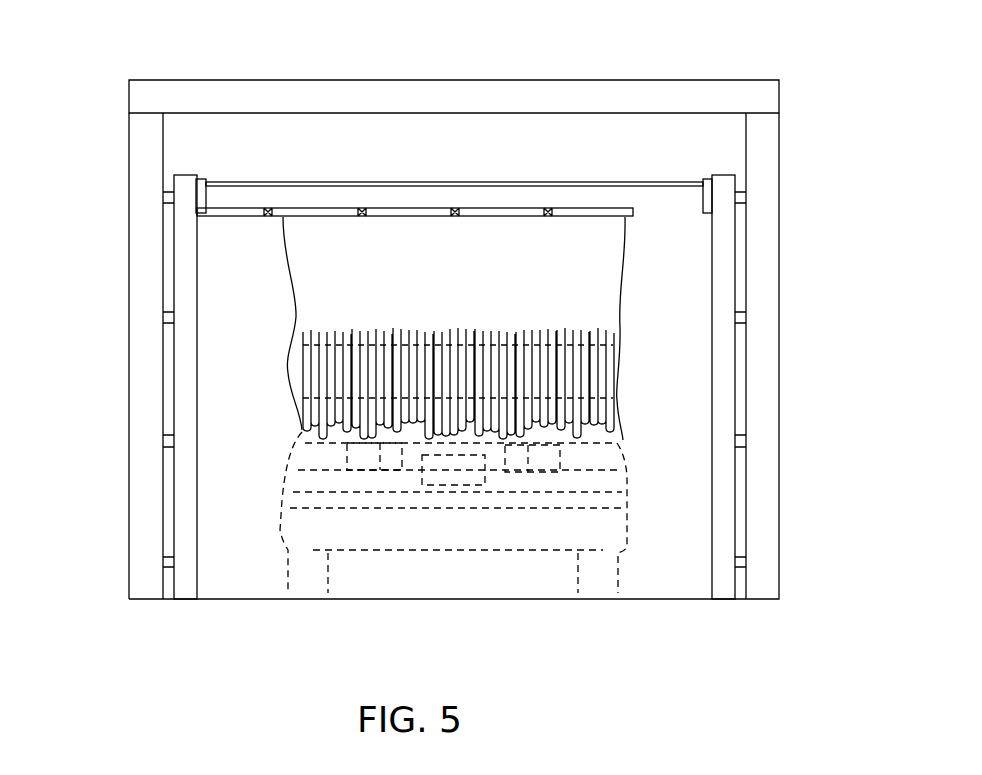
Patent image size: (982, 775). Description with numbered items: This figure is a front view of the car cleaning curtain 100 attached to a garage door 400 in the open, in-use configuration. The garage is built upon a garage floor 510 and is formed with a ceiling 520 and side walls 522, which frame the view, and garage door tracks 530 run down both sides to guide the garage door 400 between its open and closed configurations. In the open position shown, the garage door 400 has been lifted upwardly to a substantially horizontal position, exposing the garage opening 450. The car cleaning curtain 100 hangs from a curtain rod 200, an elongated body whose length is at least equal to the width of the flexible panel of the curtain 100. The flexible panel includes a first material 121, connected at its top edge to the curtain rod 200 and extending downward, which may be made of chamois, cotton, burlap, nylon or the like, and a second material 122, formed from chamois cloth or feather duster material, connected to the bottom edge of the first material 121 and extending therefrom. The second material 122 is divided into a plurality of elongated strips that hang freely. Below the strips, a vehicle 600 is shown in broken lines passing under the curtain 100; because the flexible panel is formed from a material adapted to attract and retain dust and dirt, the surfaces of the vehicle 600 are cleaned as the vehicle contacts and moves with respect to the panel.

The car cleaning curtain 100 is at (372, 359).
The first material 121 is at (298, 258).
The second material 122 is at (295, 394).
The curtain rod 200 is at (262, 210).
The garage door 400 is at (331, 180).
The garage opening 450 is at (231, 364).
The garage floor 510 is at (257, 602).
The ceiling 520 is at (540, 88).
The side walls 522 is at (137, 160).
The garage door tracks 530 is at (183, 268).
The vehicle 600 is at (624, 462).